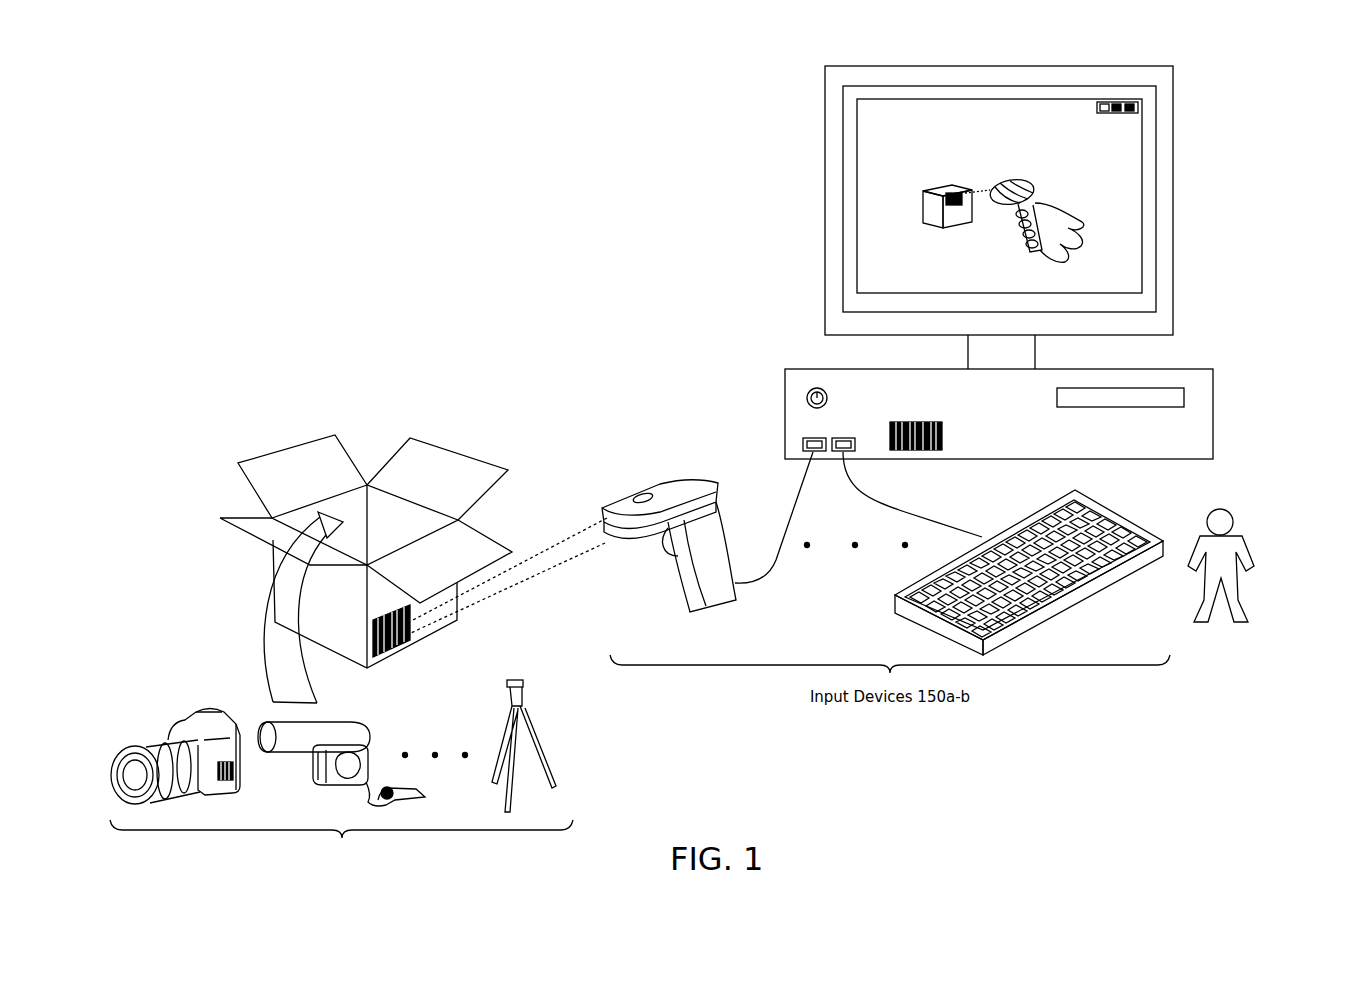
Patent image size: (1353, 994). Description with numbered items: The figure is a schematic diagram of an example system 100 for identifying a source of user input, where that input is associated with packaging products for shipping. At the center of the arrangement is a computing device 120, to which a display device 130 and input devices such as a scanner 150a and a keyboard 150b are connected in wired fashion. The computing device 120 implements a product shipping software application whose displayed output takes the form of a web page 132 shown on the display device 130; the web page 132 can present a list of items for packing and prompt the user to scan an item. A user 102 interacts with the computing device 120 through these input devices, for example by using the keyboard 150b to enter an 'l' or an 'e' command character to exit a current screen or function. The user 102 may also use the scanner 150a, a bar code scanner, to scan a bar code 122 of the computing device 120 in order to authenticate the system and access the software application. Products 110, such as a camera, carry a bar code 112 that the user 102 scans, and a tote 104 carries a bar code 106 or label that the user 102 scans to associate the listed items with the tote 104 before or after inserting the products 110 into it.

The system 100 is at (1283, 102).
The user 102 is at (1247, 620).
The tote 104 is at (280, 450).
The bar code 106 is at (393, 642).
The products 110 is at (341, 775).
The bar code 112 is at (230, 780).
The computing device 120 is at (1213, 408).
The bar code 122 is at (930, 449).
The display device 130 is at (1173, 226).
The web page 132 is at (1063, 177).
The scanner 150a is at (722, 600).
The keyboard 150b is at (1070, 598).